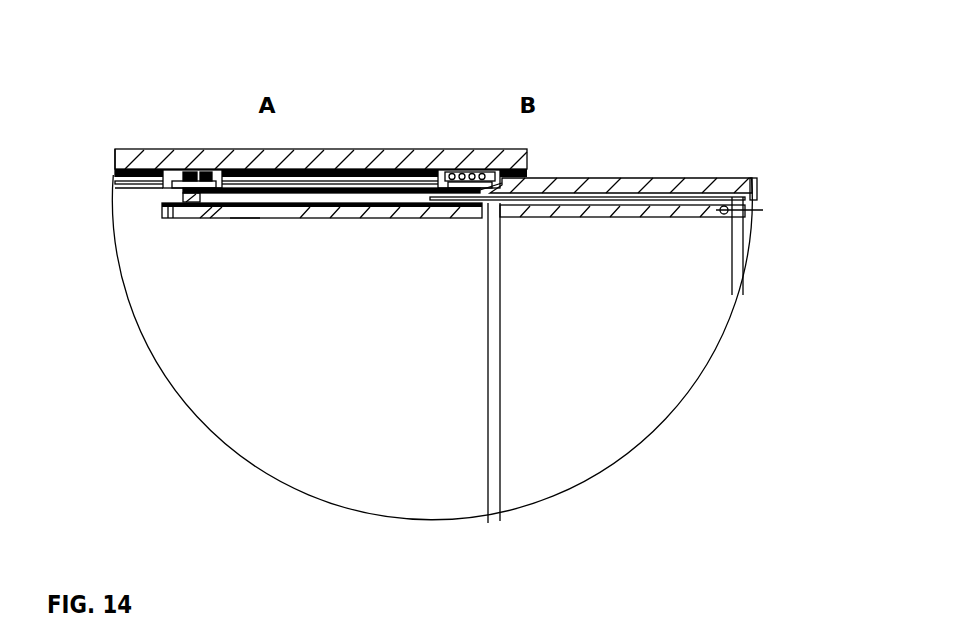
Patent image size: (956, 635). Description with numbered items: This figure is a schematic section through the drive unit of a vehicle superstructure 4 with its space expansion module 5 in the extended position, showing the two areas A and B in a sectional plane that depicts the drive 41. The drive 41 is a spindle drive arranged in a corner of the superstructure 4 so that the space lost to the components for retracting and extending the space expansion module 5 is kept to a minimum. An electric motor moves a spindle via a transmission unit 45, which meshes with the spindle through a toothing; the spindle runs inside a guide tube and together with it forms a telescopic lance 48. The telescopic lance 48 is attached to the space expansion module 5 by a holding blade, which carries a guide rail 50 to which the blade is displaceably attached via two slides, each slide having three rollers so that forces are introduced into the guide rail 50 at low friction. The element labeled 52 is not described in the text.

The superstructure 4 is at (146, 155).
The space expansion module 5 is at (752, 242).
The drive 41 is at (244, 232).
The transmission unit 45 is at (212, 220).
The telescopic lance 48 is at (548, 215).
The guide rail 50 is at (240, 180).
The bearing bracket 52 is at (483, 175).